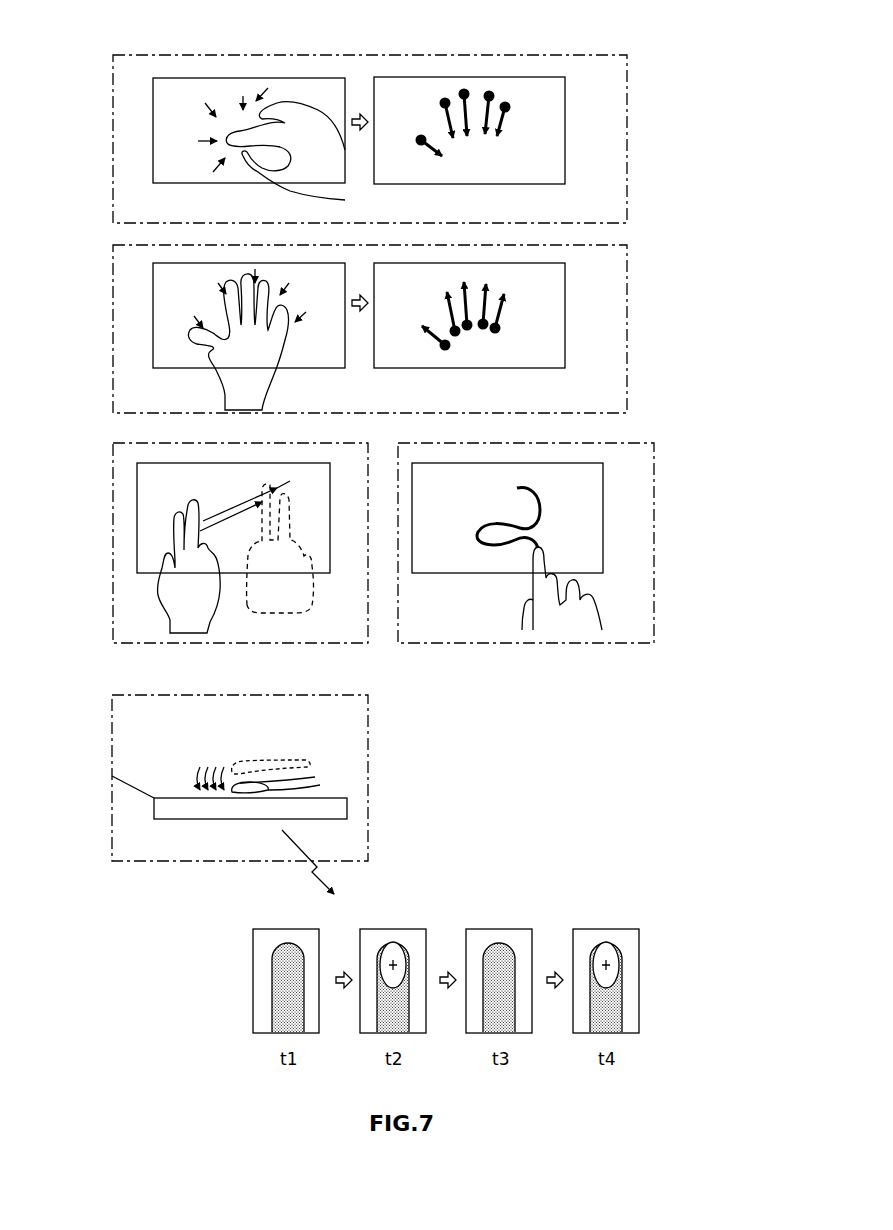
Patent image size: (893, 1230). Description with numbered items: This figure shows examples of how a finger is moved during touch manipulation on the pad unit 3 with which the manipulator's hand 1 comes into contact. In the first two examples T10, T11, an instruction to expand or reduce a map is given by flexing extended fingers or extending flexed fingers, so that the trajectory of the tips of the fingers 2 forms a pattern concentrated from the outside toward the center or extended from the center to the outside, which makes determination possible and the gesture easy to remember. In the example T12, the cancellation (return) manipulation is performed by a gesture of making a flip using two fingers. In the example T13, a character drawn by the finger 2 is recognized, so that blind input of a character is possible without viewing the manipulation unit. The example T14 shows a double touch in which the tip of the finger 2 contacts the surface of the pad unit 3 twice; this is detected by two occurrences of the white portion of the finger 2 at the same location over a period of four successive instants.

The hand 1 is at (308, 118).
The finger 2 is at (258, 762).
The pad unit 3 is at (153, 130).
The finger movement example (flexing extended fingers) T10 is at (627, 100).
The finger movement example (extending flexed fingers) T11 is at (627, 286).
The finger movement example (two-finger flip) T12 is at (113, 490).
The finger movement example (character drawing) T13 is at (654, 490).
The finger movement example (double touch) T14 is at (368, 745).